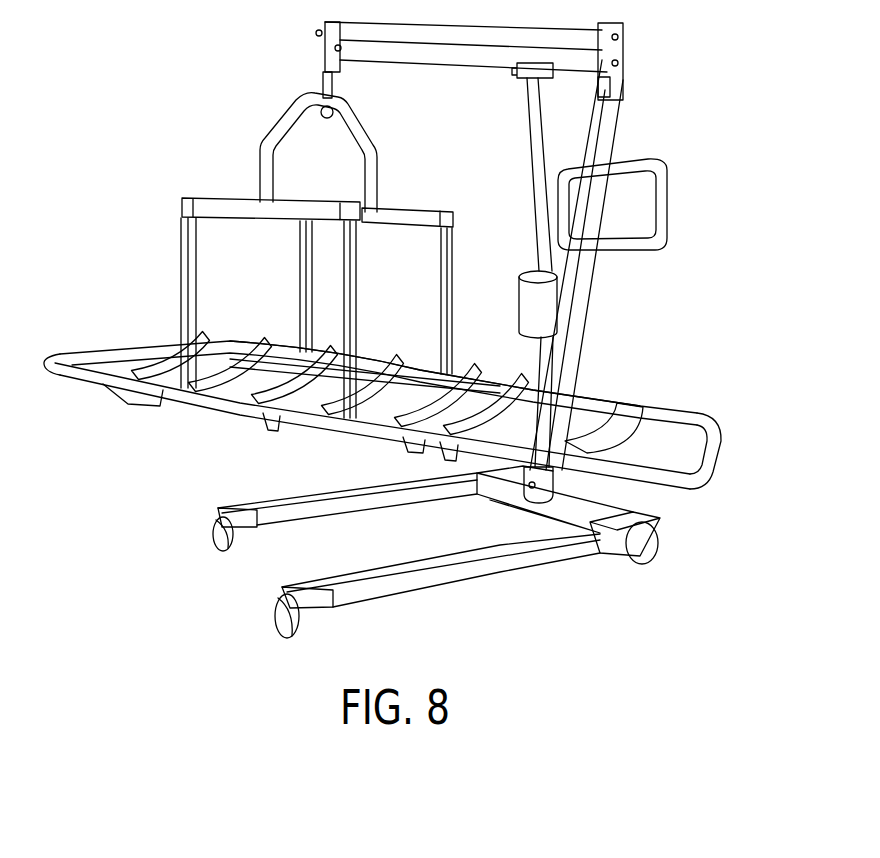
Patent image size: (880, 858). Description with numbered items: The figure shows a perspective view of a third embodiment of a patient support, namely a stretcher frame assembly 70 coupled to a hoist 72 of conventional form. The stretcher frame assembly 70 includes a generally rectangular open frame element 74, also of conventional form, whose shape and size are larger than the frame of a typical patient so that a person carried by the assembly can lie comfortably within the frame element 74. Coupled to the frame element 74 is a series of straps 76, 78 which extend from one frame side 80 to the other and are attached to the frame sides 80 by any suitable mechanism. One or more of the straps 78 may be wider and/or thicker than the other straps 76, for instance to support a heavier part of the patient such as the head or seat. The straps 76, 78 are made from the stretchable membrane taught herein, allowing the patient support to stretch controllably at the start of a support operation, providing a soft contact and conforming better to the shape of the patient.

The stretcher frame assembly 70 is at (672, 284).
The hoist 72 is at (623, 100).
The frame element 74 is at (690, 470).
The straps 76 is at (160, 350).
The straps 78 is at (637, 423).
The frame side 80 is at (603, 393).